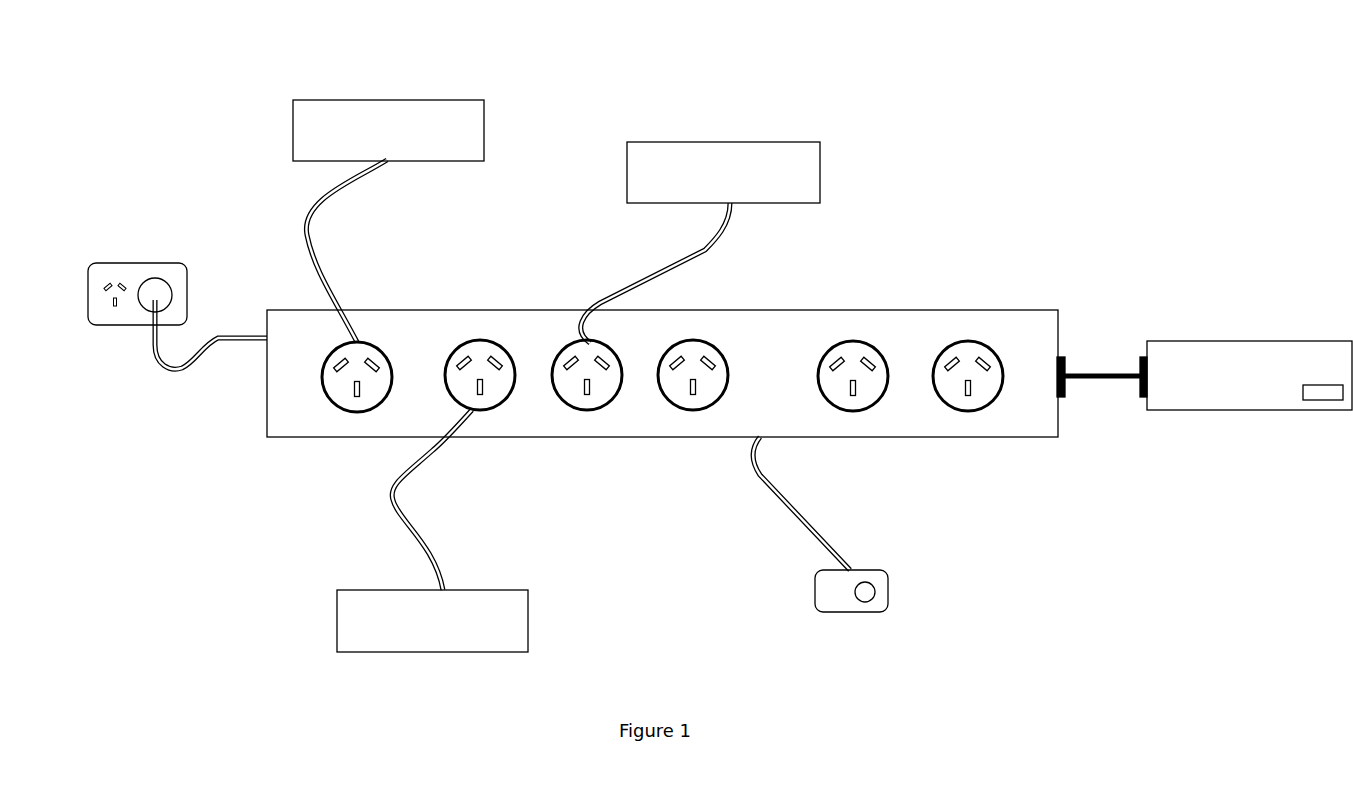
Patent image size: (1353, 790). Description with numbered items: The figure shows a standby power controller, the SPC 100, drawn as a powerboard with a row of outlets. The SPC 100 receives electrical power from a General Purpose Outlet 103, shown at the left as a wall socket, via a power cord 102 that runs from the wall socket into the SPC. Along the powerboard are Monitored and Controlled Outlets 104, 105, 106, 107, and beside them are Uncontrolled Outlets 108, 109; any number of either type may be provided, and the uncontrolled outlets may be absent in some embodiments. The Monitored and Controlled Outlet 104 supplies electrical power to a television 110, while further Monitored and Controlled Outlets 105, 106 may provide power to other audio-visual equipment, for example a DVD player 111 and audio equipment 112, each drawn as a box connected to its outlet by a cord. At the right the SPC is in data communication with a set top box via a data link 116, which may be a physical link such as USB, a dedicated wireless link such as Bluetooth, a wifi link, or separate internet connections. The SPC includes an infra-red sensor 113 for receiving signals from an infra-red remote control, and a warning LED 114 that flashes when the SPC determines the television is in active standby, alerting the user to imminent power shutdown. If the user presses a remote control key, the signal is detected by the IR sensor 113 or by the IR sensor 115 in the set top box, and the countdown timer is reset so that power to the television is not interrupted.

The standby power controller (SPC) 100 is at (1162, 358).
The power cord 102 is at (152, 358).
The general purpose outlet 103 is at (155, 290).
The monitored and controlled outlet 104 is at (320, 407).
The monitored and controlled outlet 105 is at (477, 352).
The monitored and controlled outlet 106 is at (683, 402).
The monitored and controlled outlet 107 is at (575, 402).
The uncontrolled outlet 108 is at (853, 347).
The uncontrolled outlet 109 is at (968, 350).
The television 110 is at (480, 118).
The DVD player 111 is at (350, 625).
The audio equipment 112 is at (812, 157).
The infra-red sensor 113 is at (815, 587).
The warning LED 114 is at (877, 585).
The IR sensor 115 is at (1300, 397).
The data link 116 is at (1122, 380).